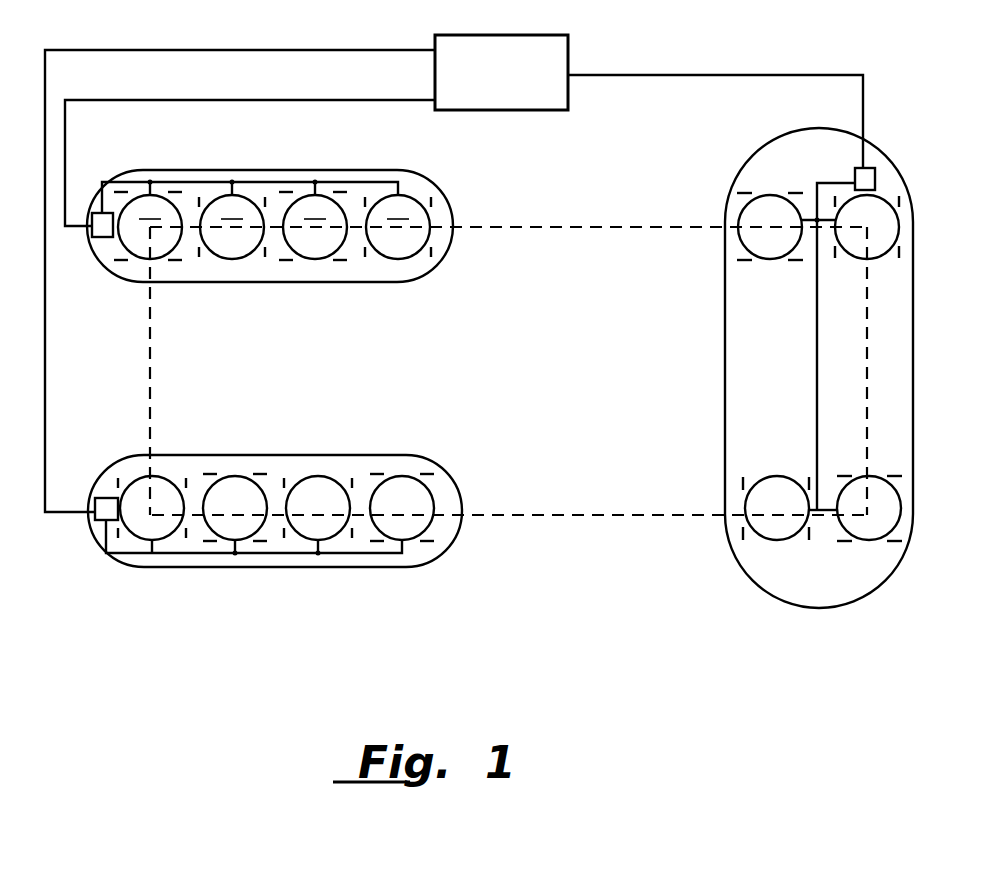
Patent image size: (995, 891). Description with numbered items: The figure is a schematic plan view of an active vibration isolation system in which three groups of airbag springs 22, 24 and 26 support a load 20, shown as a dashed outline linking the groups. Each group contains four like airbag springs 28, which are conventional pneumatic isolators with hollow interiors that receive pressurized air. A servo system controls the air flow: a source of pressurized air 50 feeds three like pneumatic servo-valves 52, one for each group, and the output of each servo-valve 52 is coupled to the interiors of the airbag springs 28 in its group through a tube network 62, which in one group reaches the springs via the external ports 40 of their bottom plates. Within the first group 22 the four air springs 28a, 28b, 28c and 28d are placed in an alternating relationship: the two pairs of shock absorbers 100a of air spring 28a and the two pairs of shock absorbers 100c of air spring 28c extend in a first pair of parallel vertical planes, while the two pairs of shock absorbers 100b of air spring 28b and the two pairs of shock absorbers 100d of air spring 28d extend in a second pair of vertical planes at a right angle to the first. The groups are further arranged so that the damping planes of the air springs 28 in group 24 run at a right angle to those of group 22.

The load 20 is at (594, 515).
The group of airbag springs 22 is at (453, 238).
The group of airbag springs 24 is at (133, 567).
The group of airbag springs 26 is at (735, 548).
The airbag spring 28 is at (405, 483).
The air spring 28a is at (147, 192).
The air spring 28b is at (230, 193).
The air spring 28c is at (313, 192).
The air spring 28d is at (396, 193).
The external port 40 is at (235, 553).
The source of pressurized air 50 is at (545, 35).
The pneumatic servo-valve 52 is at (98, 238).
The tube network 62 is at (268, 180).
The pairs of shock absorbers 100a is at (175, 192).
The pairs of shock absorbers 100b is at (265, 203).
The pairs of shock absorbers 100c is at (342, 192).
The pairs of shock absorbers 100d is at (431, 203).